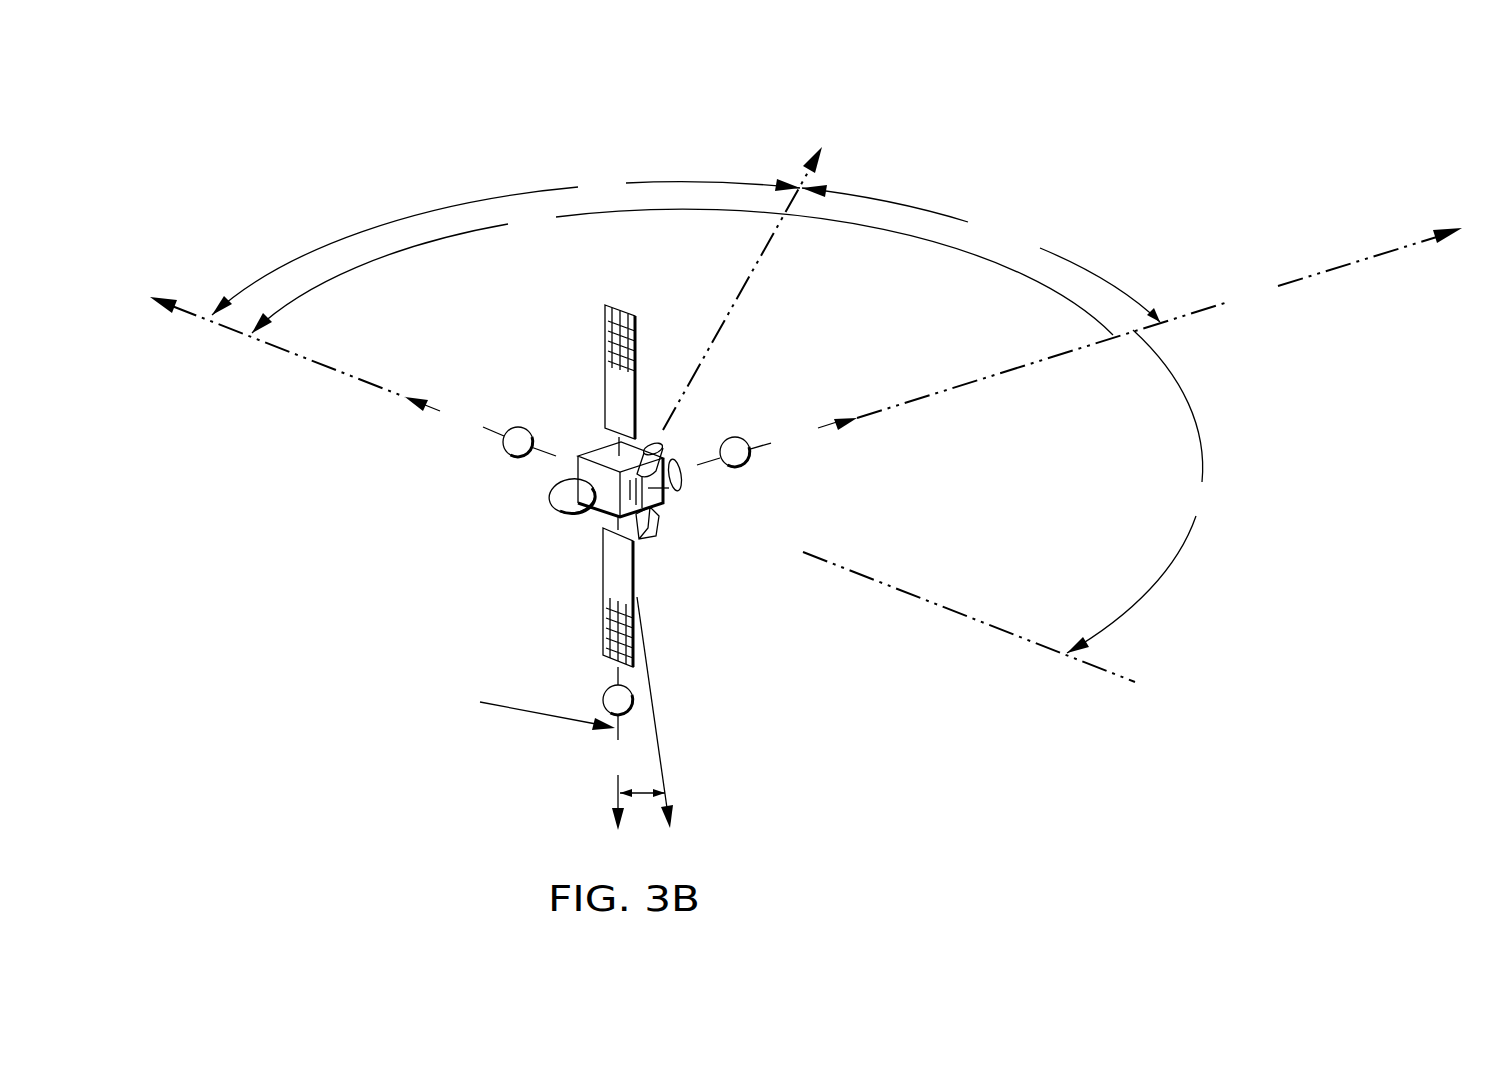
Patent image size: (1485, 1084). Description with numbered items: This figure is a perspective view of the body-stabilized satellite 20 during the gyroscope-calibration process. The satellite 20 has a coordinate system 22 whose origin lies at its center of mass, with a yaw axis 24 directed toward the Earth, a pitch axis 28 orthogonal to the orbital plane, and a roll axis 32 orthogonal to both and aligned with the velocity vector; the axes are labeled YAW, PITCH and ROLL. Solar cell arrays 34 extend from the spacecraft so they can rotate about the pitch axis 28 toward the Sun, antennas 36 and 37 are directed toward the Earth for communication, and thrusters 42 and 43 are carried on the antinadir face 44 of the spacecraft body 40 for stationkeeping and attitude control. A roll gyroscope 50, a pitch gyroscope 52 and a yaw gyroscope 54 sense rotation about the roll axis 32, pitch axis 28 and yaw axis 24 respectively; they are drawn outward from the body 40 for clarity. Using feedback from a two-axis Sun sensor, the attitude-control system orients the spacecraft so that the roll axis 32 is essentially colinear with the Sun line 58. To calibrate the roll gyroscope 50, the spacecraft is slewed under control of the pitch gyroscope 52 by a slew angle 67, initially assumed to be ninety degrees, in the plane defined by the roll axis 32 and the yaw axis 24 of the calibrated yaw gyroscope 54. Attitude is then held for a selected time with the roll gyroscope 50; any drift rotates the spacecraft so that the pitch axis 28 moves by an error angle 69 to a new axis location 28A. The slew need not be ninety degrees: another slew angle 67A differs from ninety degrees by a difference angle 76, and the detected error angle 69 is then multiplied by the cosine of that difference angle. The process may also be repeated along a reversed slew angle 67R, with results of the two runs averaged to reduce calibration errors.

The body-stabilized satellite 20 is at (551, 498).
The coordinate system 22 is at (524, 705).
The yaw axis 24 is at (642, 489).
The pitch axis 28 is at (581, 748).
The new axis location 28A is at (668, 800).
The roll axis 32 is at (800, 441).
The solar cell arrays 34 is at (613, 342).
The antenna 36 is at (552, 488).
The antenna 37 is at (683, 476).
The spacecraft body 40 is at (590, 441).
The thruster 42 is at (657, 442).
The thruster 43 is at (655, 538).
The antinadir face 44 is at (653, 488).
The roll gyroscope 50 is at (736, 437).
The pitch gyroscope 52 is at (605, 692).
The yaw gyroscope 54 is at (519, 427).
The Sun line 58 is at (1159, 323).
The slew angle 67 is at (682, 268).
The slew angle 67A is at (981, 253).
The reversed slew angle 67R is at (1153, 491).
The error angle 69 is at (662, 794).
The difference angle 76 is at (506, 239).